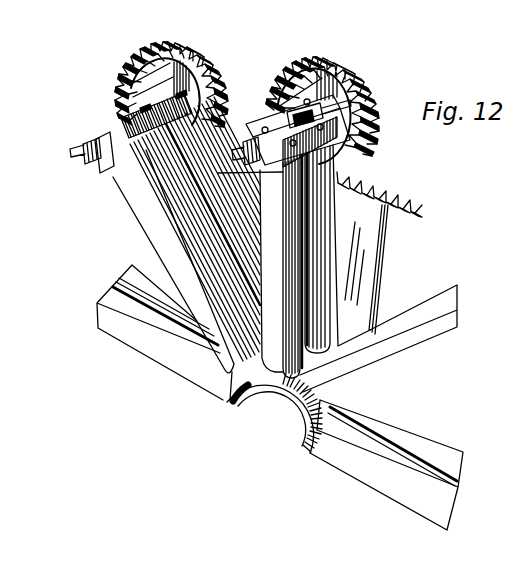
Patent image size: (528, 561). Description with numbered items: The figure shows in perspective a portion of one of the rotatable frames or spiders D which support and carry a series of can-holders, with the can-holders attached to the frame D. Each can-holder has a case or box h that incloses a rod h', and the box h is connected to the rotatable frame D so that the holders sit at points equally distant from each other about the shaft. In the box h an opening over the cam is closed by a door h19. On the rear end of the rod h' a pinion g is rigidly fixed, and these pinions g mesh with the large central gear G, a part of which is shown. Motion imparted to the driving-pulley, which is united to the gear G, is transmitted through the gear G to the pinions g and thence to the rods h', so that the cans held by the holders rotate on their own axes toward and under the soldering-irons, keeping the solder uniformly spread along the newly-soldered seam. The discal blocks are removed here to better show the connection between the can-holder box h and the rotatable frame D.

The rotatable frame or spider D is at (280, 397).
The gear-wheel G is at (357, 254).
The pinion g is at (193, 57).
The door h19 is at (292, 136).
The case or box h is at (252, 144).
The rod h' is at (74, 151).